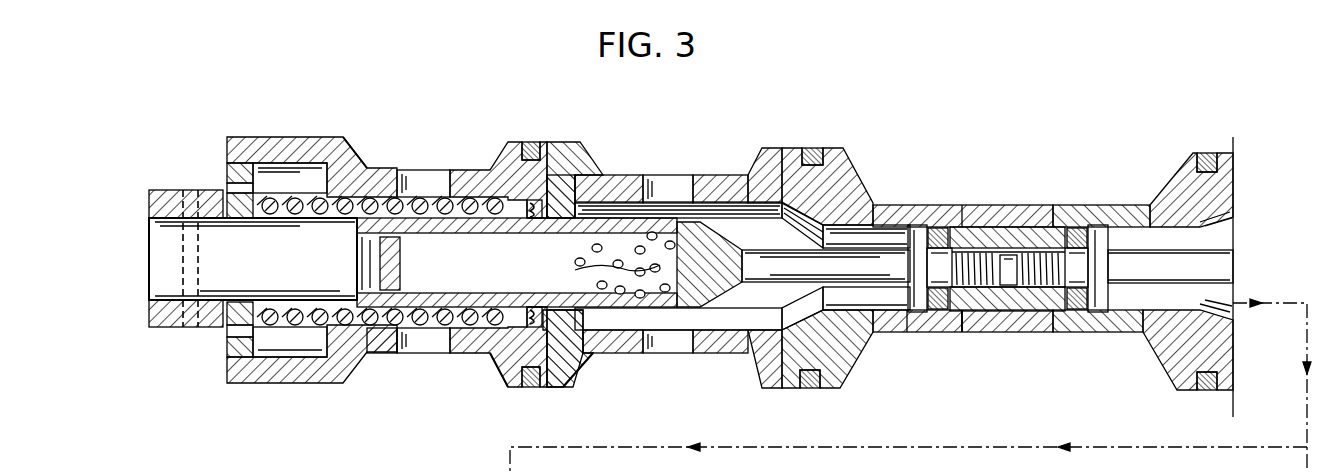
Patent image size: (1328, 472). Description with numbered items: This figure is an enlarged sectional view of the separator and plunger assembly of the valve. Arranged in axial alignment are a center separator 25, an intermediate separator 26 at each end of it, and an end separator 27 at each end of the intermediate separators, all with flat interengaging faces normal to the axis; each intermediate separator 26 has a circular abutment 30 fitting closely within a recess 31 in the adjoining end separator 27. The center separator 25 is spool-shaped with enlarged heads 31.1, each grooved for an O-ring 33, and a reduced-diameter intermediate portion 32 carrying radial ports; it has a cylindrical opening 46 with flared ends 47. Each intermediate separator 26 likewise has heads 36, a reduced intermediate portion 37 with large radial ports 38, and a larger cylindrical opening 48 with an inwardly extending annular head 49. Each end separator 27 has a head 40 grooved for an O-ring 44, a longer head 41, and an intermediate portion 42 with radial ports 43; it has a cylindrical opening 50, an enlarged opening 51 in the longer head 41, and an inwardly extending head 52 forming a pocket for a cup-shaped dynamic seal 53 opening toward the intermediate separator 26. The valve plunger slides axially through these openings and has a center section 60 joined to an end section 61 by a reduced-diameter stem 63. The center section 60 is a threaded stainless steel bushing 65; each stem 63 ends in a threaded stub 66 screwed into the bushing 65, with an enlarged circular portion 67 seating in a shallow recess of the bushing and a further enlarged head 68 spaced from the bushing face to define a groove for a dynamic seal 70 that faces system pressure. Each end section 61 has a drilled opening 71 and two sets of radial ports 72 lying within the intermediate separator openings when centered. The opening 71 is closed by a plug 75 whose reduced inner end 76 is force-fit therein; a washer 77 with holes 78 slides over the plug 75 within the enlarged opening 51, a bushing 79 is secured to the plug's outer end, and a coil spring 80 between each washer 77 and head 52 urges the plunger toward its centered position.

The center separator 25 is at (880, 200).
The intermediate separators 26 is at (732, 176).
The end separators 27 is at (360, 150).
The circular abutment 30 is at (565, 185).
The recess 31 is at (550, 320).
The heads 31.1 is at (830, 150).
The intermediate portion 32 is at (1105, 208).
The O-ring 33 is at (811, 147).
The heads 36 is at (563, 142).
The intermediate portion 37 is at (700, 178).
The radial ports 38 is at (668, 355).
The head 40 is at (530, 142).
The longer head 41 is at (283, 137).
The intermediate portion 42 is at (472, 170).
The radial ports 43 is at (428, 340).
The O-ring 44 is at (540, 142).
The cylindrical opening 46 is at (915, 333).
The flared ends 47 is at (790, 312).
The cylindrical opening 48 is at (720, 328).
The annular head 49 is at (590, 355).
The cylindrical opening 50 is at (380, 330).
The enlarged opening 51 is at (270, 355).
The head 52 is at (510, 320).
The dynamic seal 53 is at (530, 300).
The center section 60 is at (1002, 235).
The end section 61 is at (627, 212).
The stems 63 is at (742, 270).
The bushing 65 is at (1005, 285).
The threaded stub 66 is at (960, 287).
The circular portion 67 is at (935, 265).
The circular head 68 is at (915, 225).
The dynamic seals 70 is at (935, 310).
The drilled opening 71 is at (458, 278).
The radial ports 72 is at (578, 268).
The plug 75 is at (158, 255).
The inner end 76 is at (365, 258).
The washer 77 is at (226, 170).
The holes 78 is at (226, 335).
The bushing 79 is at (150, 195).
The coil spring 80 is at (315, 330).